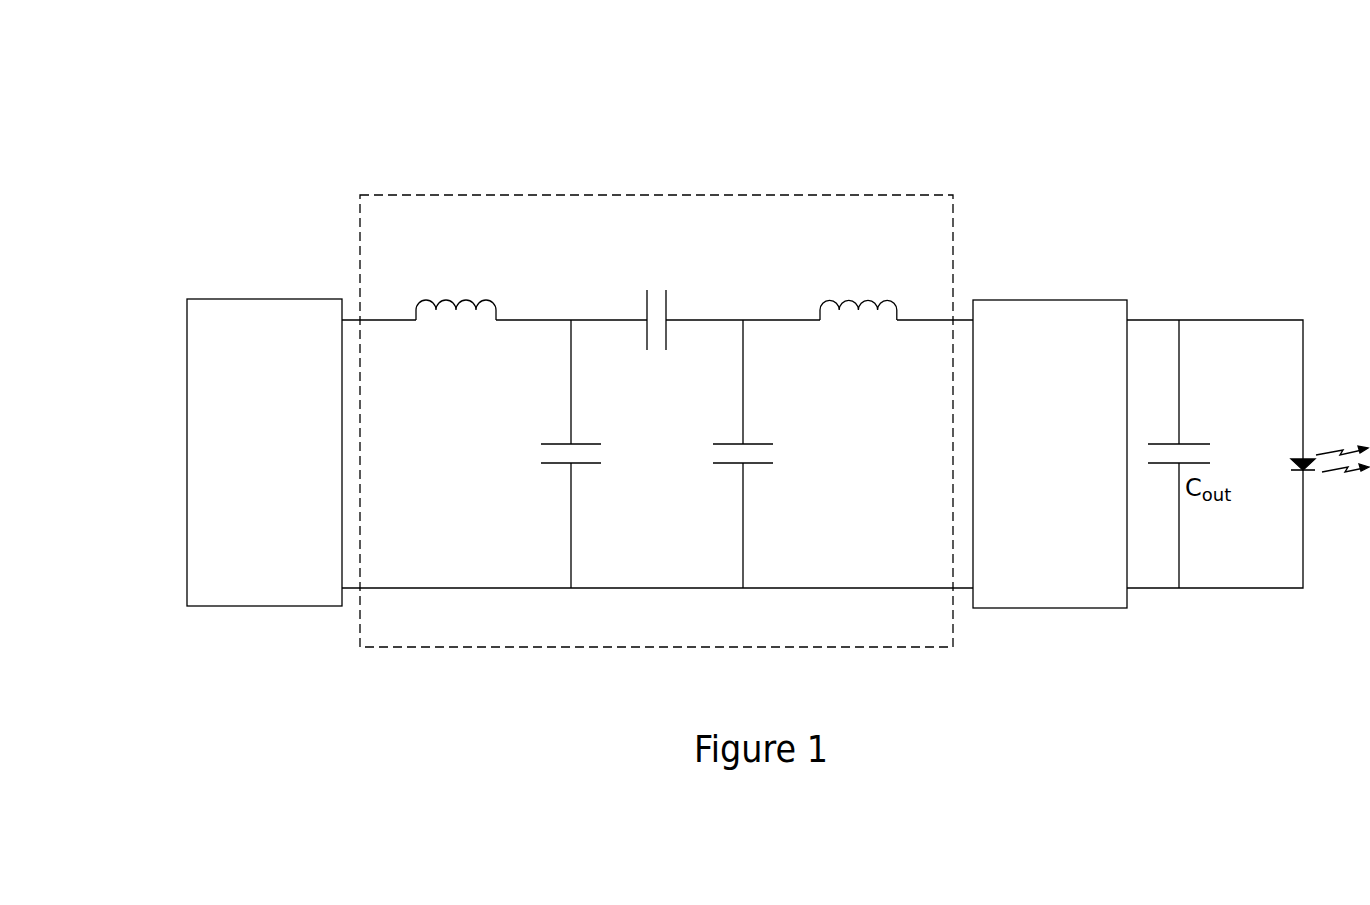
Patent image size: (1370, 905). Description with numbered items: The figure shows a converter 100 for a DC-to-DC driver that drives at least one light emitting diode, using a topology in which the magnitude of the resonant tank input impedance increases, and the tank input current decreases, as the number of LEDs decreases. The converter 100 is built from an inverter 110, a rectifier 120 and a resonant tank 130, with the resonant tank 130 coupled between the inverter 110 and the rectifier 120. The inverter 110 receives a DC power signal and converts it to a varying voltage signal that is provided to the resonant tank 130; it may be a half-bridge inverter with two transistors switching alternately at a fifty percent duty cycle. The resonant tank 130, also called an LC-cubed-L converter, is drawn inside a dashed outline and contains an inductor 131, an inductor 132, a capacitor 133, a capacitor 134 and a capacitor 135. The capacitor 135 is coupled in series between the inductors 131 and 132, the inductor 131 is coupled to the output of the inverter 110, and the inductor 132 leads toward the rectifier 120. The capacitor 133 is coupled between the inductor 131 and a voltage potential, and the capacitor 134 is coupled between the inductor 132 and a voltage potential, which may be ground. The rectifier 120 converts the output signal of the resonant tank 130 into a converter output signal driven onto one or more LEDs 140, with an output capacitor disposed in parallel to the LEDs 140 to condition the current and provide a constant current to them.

The converter 100 is at (238, 151).
The inverter 110 is at (264, 299).
The rectifier 120 is at (1050, 300).
The resonant tank 130 is at (928, 194).
The inductor 131 is at (426, 305).
The inductor 132 is at (830, 303).
The capacitor 133 is at (548, 464).
The capacitor 134 is at (758, 464).
The capacitor 135 is at (647, 290).
The light emitting diode 140 is at (1306, 458).